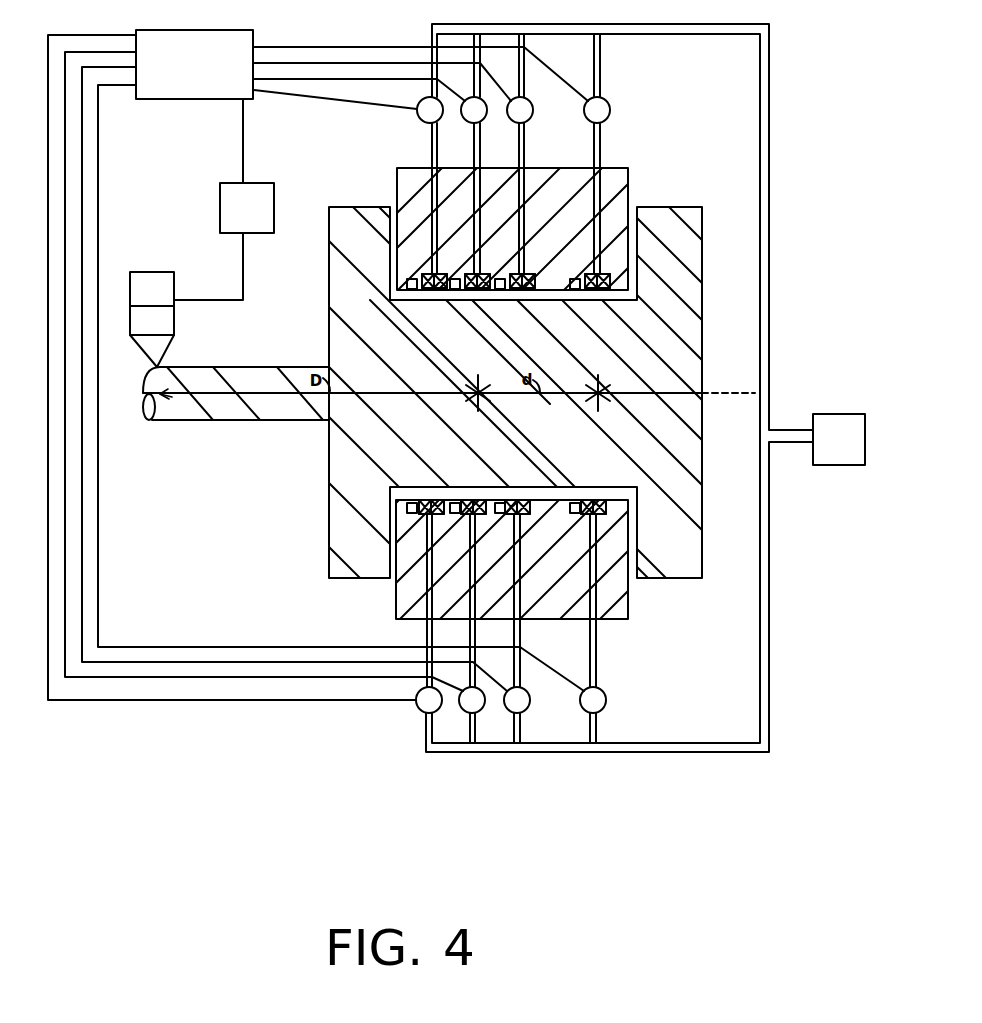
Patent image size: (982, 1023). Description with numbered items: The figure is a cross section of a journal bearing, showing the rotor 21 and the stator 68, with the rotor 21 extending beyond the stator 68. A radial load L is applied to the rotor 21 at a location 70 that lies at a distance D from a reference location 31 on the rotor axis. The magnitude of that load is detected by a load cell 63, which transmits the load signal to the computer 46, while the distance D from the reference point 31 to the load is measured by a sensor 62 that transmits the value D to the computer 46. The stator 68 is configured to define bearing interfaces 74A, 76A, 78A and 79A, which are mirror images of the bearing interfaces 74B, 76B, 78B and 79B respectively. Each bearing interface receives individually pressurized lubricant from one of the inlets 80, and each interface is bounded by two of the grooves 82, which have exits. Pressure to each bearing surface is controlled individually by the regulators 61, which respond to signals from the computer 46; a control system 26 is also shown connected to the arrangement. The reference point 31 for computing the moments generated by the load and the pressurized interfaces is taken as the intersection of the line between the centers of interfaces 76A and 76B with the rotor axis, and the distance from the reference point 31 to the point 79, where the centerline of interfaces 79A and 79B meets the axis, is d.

The rotor 21 is at (694, 207).
The control system 26 is at (839, 439).
The reference location 31 is at (478, 404).
The computer 46 is at (186, 76).
The regulators 61 is at (513, 405).
The sensor 62 is at (224, 241).
The load cell 63 is at (152, 319).
The stator 68 is at (628, 193).
The location of radial load 70 is at (163, 366).
The bearing interface 74A is at (435, 498).
The bearing interface 74B is at (440, 289).
The bearing interface 76A is at (477, 498).
The bearing interface 76B is at (492, 289).
The bearing interface 78A is at (520, 498).
The bearing interface 78B is at (528, 273).
The point 79 is at (599, 390).
The bearing interface 79A is at (599, 498).
The bearing interface 79B is at (603, 289).
The inlets 80 is at (431, 158).
The grooves 82 is at (412, 278).